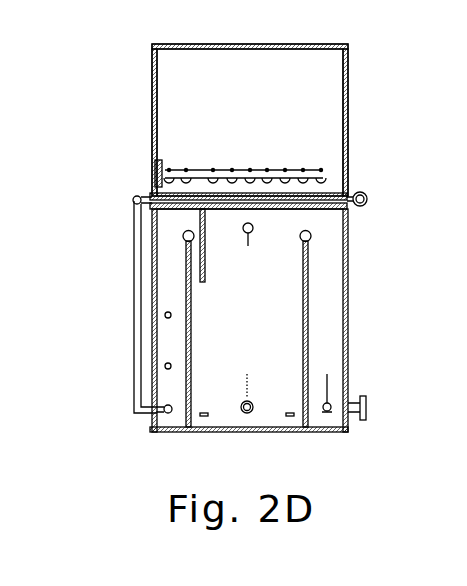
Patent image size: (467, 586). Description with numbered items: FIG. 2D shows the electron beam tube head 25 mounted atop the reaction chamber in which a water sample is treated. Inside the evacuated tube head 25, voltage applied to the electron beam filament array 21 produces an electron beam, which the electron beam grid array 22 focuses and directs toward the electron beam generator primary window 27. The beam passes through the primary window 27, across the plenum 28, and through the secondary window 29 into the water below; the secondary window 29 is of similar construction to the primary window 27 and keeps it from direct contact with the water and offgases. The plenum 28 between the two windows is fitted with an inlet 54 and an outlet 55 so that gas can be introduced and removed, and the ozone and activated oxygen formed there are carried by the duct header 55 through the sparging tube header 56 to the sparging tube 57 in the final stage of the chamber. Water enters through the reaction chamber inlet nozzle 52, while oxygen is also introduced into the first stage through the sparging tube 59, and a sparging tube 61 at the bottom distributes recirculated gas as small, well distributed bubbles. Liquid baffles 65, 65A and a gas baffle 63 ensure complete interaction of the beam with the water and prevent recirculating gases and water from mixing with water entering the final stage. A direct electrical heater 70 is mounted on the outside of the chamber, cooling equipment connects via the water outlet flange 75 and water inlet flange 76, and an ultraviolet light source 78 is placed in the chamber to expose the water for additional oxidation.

The electron beam filament array 21 is at (213, 169).
The electron beam grid array 22 is at (252, 180).
The electron beam tube head 25 is at (347, 90).
The electron beam generator primary window 27 is at (344, 194).
The plenum 28 is at (348, 207).
The secondary window 29 is at (334, 208).
The reaction chamber inlet nozzle 52 is at (364, 395).
The inlet 54 is at (366, 192).
The outlet 55 is at (136, 196).
The sparging tube header 56 is at (134, 284).
The sparging tube 57 is at (164, 406).
The sparging tube 59 is at (329, 381).
The sparging tube 61 is at (251, 374).
The gas baffle 63 is at (200, 221).
The liquid baffle 65 is at (192, 331).
The liquid baffle 65A is at (303, 291).
The direct electrical heater 70 is at (272, 432).
The water outlet flange 75 is at (254, 404).
The water inlet flange 76 is at (248, 234).
The ultraviolet light source 78 is at (164, 366).